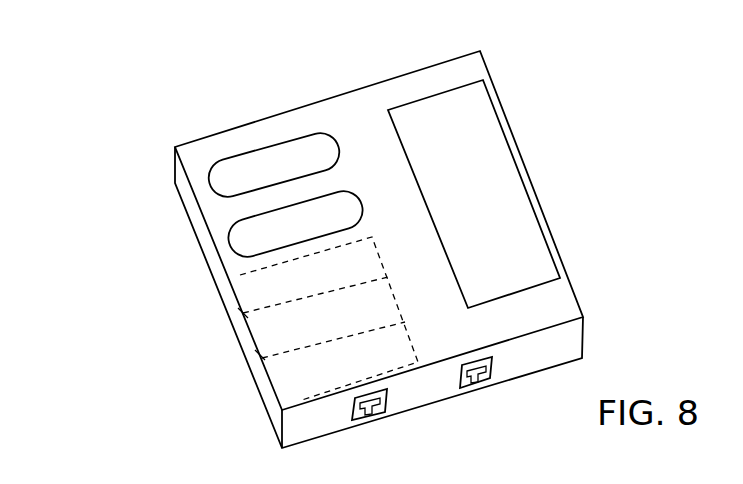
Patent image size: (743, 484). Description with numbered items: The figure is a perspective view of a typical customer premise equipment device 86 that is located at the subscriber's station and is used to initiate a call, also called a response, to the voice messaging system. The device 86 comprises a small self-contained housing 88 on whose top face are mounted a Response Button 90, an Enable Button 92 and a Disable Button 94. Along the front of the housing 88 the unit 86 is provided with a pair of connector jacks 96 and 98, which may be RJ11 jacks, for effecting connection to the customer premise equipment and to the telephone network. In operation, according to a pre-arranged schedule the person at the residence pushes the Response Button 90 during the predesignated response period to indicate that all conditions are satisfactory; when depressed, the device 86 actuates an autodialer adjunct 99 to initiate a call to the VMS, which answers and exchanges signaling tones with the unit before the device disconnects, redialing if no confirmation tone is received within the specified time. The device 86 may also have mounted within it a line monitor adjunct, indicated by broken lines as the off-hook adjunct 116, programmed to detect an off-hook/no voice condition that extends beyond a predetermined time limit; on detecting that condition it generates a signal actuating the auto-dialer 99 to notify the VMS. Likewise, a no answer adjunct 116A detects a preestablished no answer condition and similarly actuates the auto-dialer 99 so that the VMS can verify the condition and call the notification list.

The customer premise equipment (CPE) device 86 is at (242, 125).
The housing 88 is at (557, 306).
The Response Button 90 is at (508, 138).
The Enable Button 92 is at (208, 188).
The Disable Button 94 is at (230, 247).
The connector jack 96 is at (355, 410).
The connector jack 98 is at (493, 365).
The autodialer adjunct 99 is at (236, 311).
The off-hook adjunct 116 is at (258, 353).
The no answer adjunct 116A is at (276, 406).